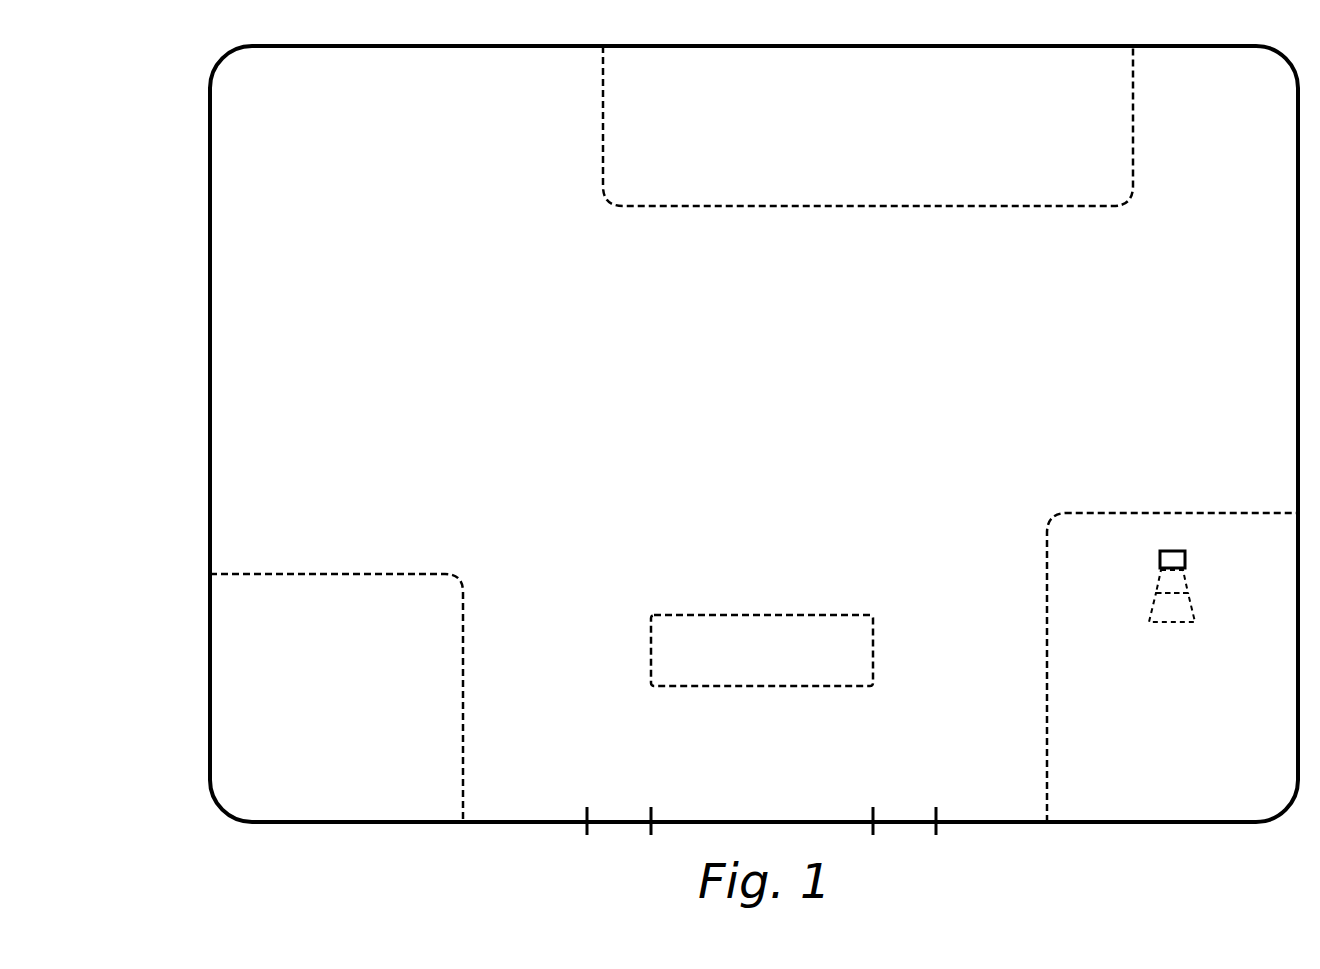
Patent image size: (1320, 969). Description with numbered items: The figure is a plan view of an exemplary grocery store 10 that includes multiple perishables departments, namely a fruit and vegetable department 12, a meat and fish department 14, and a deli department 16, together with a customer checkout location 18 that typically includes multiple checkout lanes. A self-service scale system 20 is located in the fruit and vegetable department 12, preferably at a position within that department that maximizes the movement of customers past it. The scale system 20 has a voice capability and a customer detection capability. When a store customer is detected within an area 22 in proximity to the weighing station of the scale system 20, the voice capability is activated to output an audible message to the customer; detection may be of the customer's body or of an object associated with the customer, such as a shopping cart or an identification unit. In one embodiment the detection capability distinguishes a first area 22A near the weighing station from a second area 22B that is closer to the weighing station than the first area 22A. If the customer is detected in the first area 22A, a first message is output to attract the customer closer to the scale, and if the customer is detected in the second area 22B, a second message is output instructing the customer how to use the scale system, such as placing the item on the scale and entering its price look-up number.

The grocery store 10 is at (208, 302).
The fruit and vegetable department 12 is at (1233, 512).
The meat and fish department 14 is at (905, 207).
The deli department 16 is at (320, 573).
The customer checkout location 18 is at (762, 614).
The self-service scale system 20 is at (1173, 555).
The area 22 is at (1180, 644).
The first area 22A is at (1177, 605).
The second area 22B is at (1167, 583).